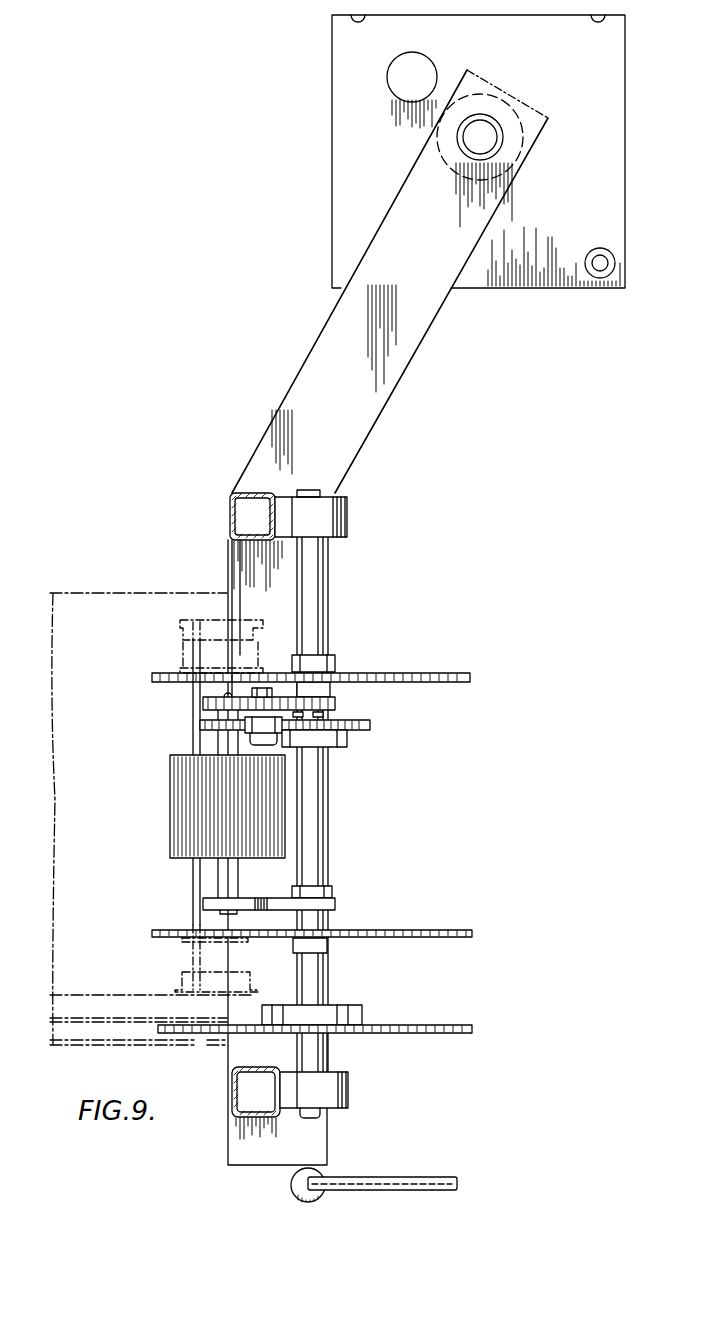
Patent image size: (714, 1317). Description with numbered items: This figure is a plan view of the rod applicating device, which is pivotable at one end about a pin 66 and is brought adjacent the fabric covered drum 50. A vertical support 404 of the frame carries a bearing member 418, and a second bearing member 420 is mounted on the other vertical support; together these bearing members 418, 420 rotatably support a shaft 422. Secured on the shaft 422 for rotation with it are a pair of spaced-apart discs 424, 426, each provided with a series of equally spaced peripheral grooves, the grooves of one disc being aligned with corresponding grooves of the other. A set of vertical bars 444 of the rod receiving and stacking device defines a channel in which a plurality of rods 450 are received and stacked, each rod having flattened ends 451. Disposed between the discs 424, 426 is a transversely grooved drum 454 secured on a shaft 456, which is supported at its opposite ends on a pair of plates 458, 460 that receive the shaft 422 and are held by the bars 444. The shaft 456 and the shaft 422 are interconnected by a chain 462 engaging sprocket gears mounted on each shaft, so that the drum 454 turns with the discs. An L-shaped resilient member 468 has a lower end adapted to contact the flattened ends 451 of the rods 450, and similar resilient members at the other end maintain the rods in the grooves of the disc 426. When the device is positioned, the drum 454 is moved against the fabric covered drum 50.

The fabric covered drum 50 is at (108, 592).
The pin 66 is at (492, 137).
The vertical support 404 is at (230, 505).
The bearing member 418 is at (327, 518).
The bearing member 420 is at (347, 1085).
The shaft 422 is at (313, 807).
The disc 424 is at (463, 673).
The disc 426 is at (433, 930).
The vertical bars 444 is at (327, 715).
The rods 450 is at (193, 897).
The flattened ends 451 is at (190, 657).
The transversely grooved drum 454 is at (190, 792).
The shaft 456 is at (227, 868).
The plate 458 is at (280, 700).
The plate 460 is at (280, 903).
The chain 462 is at (370, 723).
The L-shaped resilient member 468 is at (207, 627).